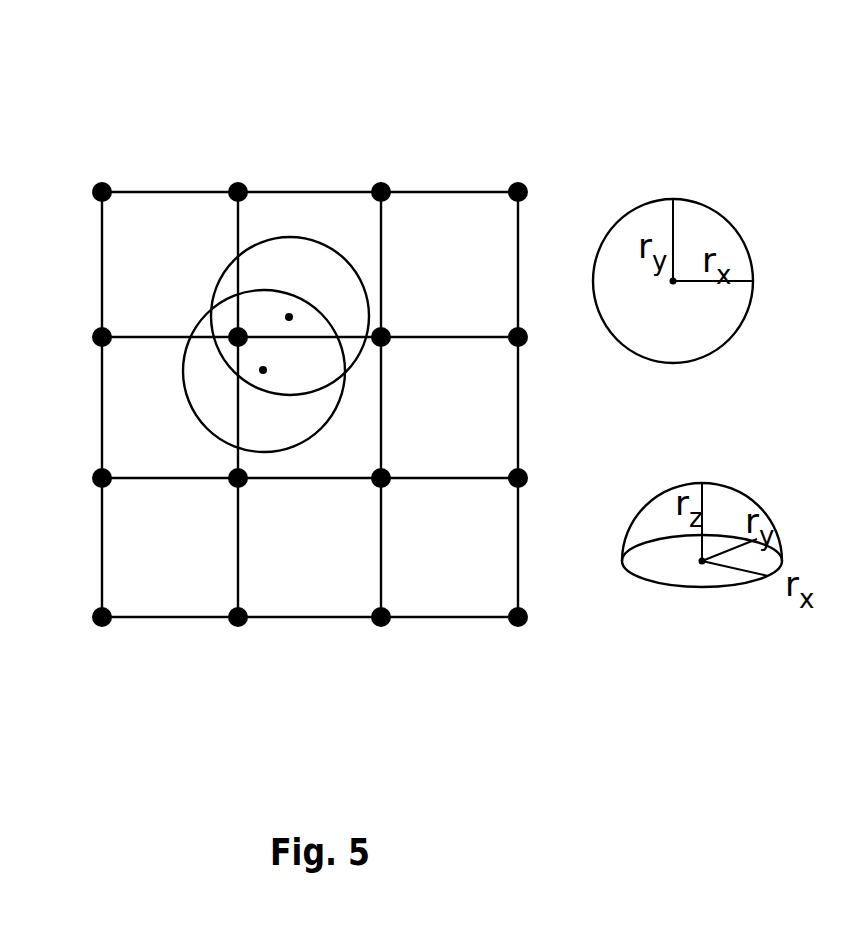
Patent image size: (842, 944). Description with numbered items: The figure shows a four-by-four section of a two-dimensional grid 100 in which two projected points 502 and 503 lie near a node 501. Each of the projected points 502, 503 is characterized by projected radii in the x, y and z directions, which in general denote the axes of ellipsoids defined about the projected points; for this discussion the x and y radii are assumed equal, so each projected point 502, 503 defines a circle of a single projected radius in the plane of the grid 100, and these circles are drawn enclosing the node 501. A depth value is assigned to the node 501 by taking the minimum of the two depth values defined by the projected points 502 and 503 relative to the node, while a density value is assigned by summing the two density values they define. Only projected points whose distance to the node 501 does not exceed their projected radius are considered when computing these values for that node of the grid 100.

The 2D grid 100 is at (491, 696).
The node 501 is at (231, 327).
The projected point 502 is at (265, 363).
The projected point 503 is at (294, 307).